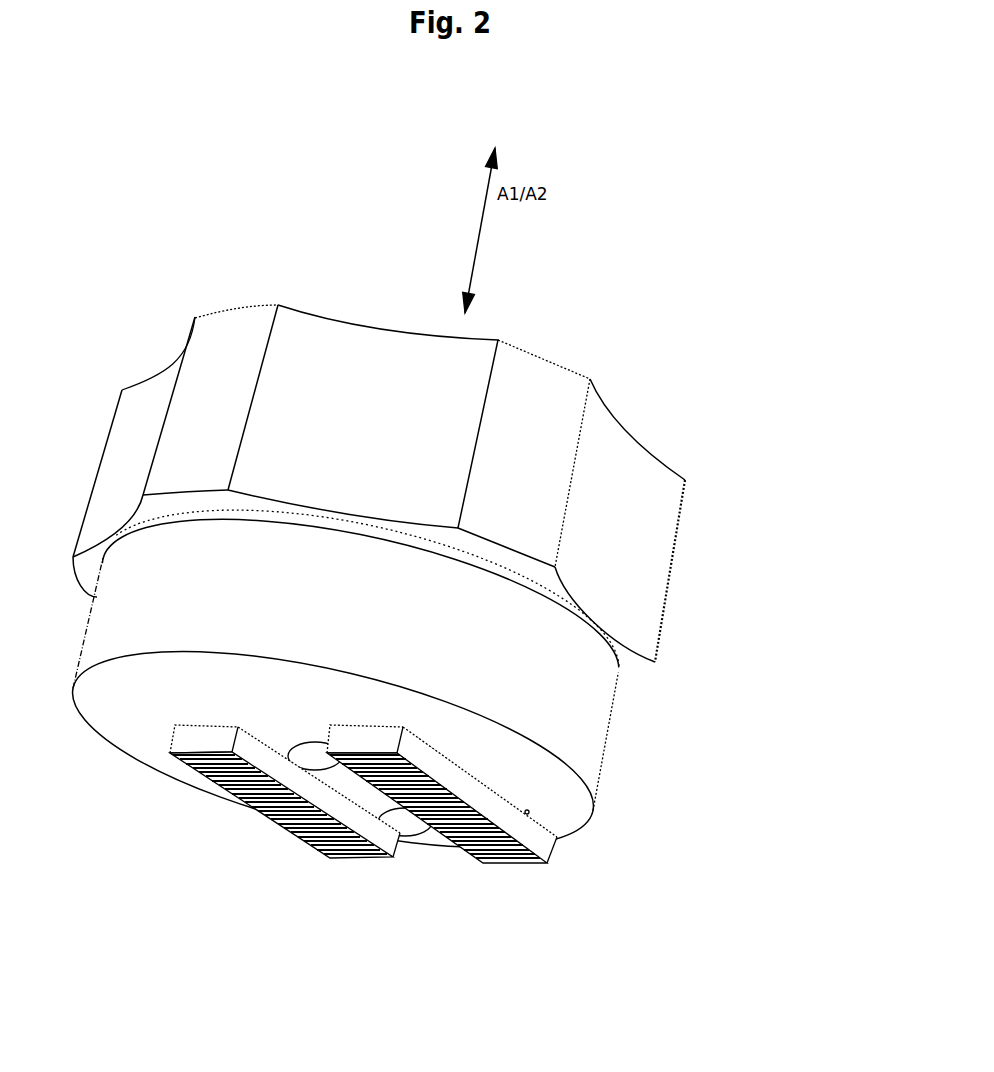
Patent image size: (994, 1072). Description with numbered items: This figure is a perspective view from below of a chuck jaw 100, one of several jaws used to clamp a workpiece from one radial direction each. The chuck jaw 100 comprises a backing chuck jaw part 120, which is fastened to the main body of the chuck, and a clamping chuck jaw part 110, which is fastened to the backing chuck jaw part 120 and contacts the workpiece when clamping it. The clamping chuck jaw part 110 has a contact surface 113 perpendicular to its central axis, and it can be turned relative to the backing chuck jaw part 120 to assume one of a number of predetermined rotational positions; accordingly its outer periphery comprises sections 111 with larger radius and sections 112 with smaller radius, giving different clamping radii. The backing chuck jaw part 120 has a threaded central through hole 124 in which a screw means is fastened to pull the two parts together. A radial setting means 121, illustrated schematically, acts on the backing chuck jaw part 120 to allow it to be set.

The chuck jaw 100 is at (743, 428).
The clamping chuck jaw part 110 is at (687, 507).
The sections with larger radius 111 is at (548, 373).
The sections with smaller radius 112 is at (367, 360).
The contact surface 113 is at (643, 682).
The backing chuck jaw part 120 is at (610, 733).
The radial setting means 121 is at (557, 850).
The threaded central through hole 124 is at (293, 743).